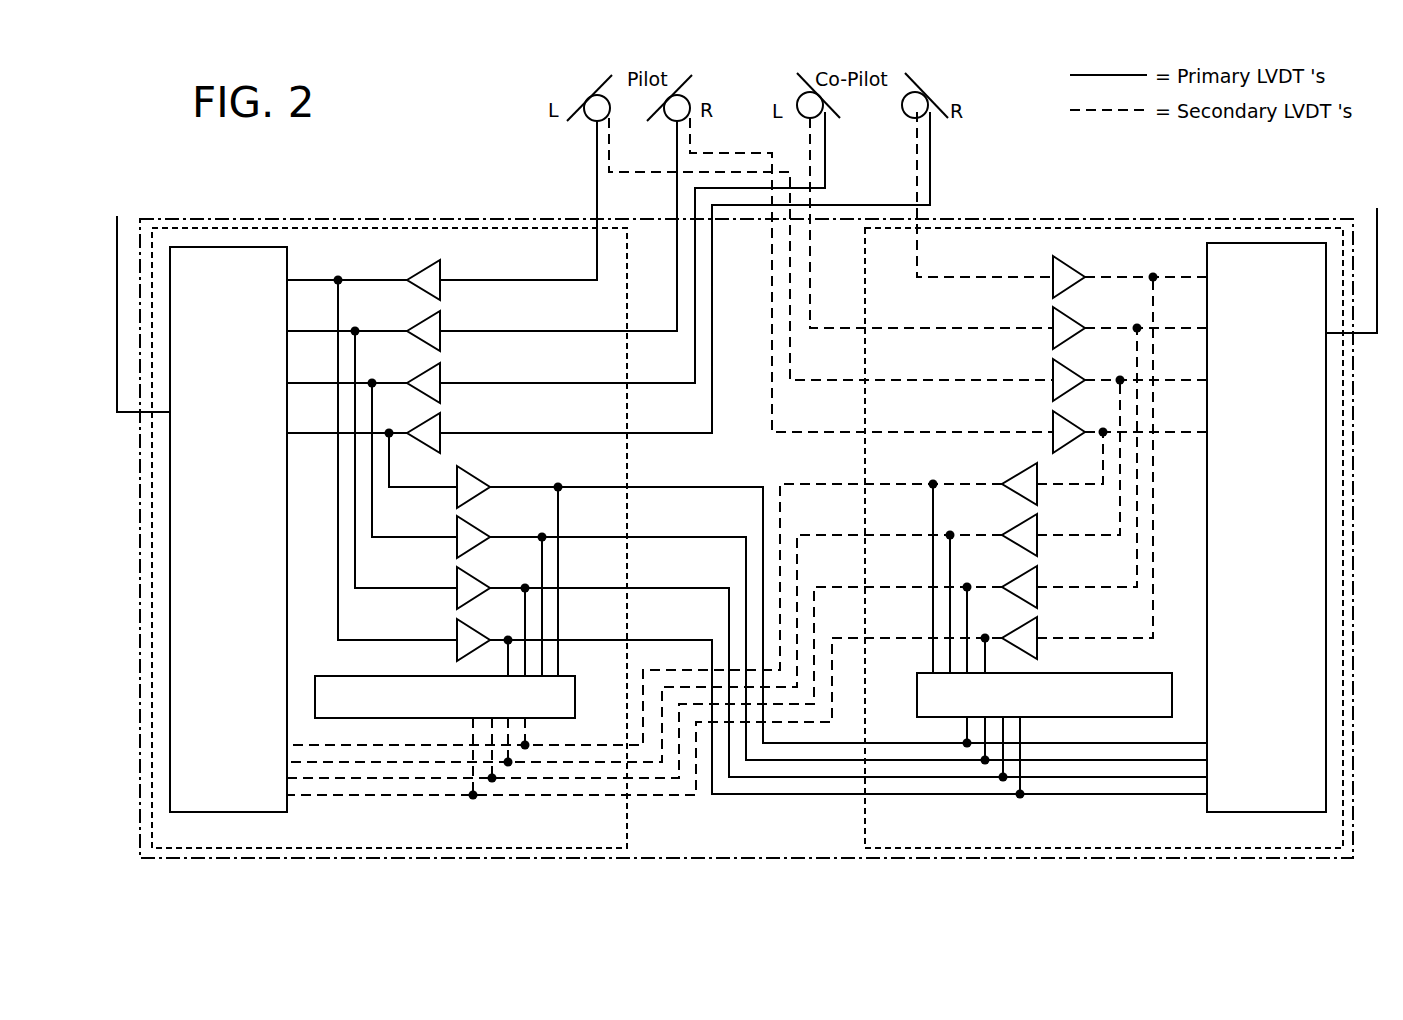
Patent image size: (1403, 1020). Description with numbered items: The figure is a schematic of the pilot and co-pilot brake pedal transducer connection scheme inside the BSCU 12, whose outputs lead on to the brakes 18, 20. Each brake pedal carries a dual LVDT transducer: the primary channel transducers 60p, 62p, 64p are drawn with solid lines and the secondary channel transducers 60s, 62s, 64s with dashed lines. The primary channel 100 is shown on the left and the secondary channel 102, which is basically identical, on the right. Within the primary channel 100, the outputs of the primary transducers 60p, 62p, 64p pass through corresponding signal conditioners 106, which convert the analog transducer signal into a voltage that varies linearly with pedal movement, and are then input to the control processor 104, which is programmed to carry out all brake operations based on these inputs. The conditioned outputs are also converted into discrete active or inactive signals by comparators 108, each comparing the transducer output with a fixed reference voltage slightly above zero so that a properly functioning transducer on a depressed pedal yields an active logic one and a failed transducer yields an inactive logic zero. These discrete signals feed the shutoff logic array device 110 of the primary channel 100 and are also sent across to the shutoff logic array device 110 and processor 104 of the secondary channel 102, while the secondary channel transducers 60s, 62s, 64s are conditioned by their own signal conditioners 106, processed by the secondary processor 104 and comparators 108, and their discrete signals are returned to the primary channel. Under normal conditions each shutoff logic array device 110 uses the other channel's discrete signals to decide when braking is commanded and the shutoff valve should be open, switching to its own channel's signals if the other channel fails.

The BSCU 12 is at (207, 219).
The brake 18 is at (136, 289).
The brake 20 is at (1361, 244).
The primary channel transducer 60p is at (556, 97).
The secondary channel transducer 60s is at (831, 249).
The primary channel transducer 62p is at (680, 66).
The secondary channel transducer 62s is at (871, 275).
The primary channel transducer 64p is at (766, 92).
The secondary channel transducer 64s is at (931, 220).
The primary channel 100 is at (627, 823).
The secondary channel 102 is at (865, 826).
The control processor 104 is at (288, 593).
The signal conditioner 106 is at (416, 294).
The comparator 108 is at (457, 528).
The shutoff logic array device 110 is at (315, 700).